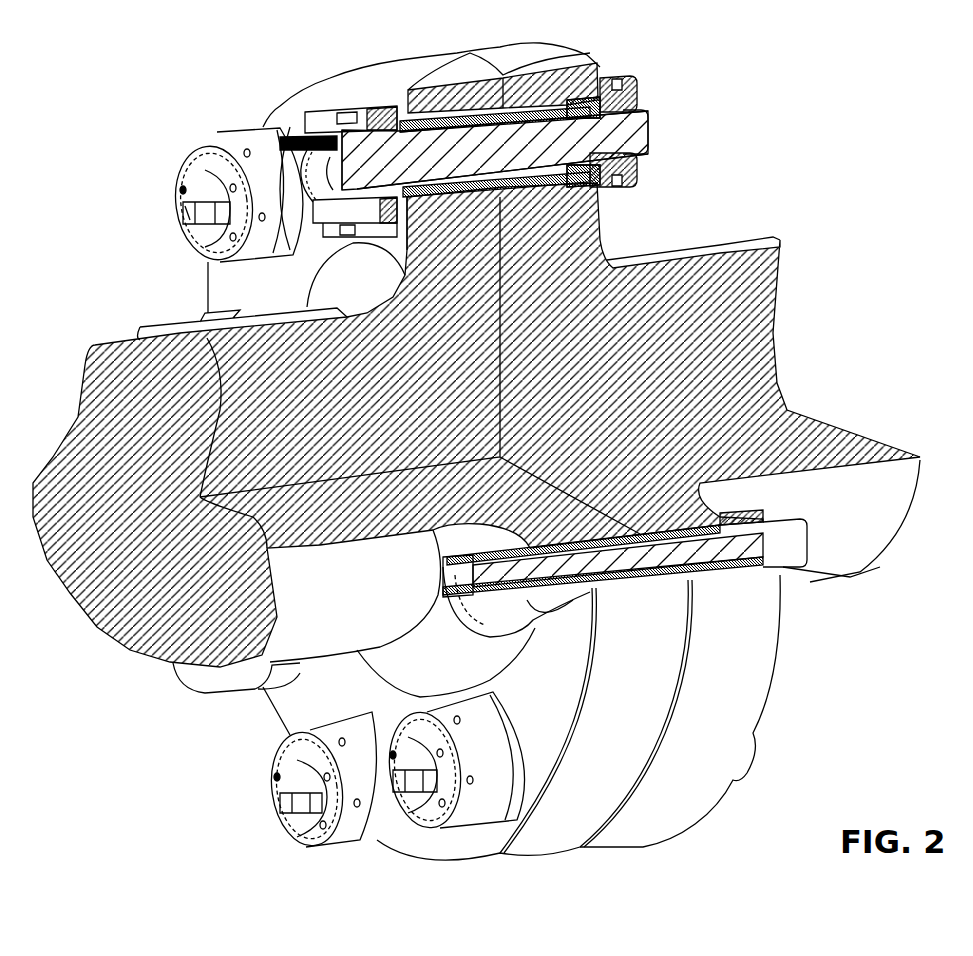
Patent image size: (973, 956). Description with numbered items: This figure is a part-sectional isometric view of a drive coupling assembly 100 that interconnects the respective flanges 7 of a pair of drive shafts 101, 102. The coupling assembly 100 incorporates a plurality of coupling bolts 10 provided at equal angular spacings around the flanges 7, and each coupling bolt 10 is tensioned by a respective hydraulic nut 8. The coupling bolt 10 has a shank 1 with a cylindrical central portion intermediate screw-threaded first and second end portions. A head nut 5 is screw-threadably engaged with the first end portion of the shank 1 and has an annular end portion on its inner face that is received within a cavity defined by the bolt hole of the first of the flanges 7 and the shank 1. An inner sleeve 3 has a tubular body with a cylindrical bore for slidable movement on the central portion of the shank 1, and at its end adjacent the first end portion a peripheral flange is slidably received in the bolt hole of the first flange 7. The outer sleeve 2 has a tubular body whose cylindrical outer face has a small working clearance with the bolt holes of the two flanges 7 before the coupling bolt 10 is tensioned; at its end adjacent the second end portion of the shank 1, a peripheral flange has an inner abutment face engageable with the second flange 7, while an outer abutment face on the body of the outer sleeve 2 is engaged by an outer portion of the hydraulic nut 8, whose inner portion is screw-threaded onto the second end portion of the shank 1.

The drive coupling assembly 100 is at (826, 142).
The drive shaft 101 is at (393, 412).
The drive shaft 102 is at (661, 366).
The shank 1 is at (618, 143).
The outer sleeve 2 is at (400, 110).
The inner sleeve 3 is at (547, 103).
The head nut 5 is at (640, 97).
The flange 7 is at (642, 698).
The hydraulic nut 8 is at (222, 125).
The coupling bolt 10 is at (645, 170).